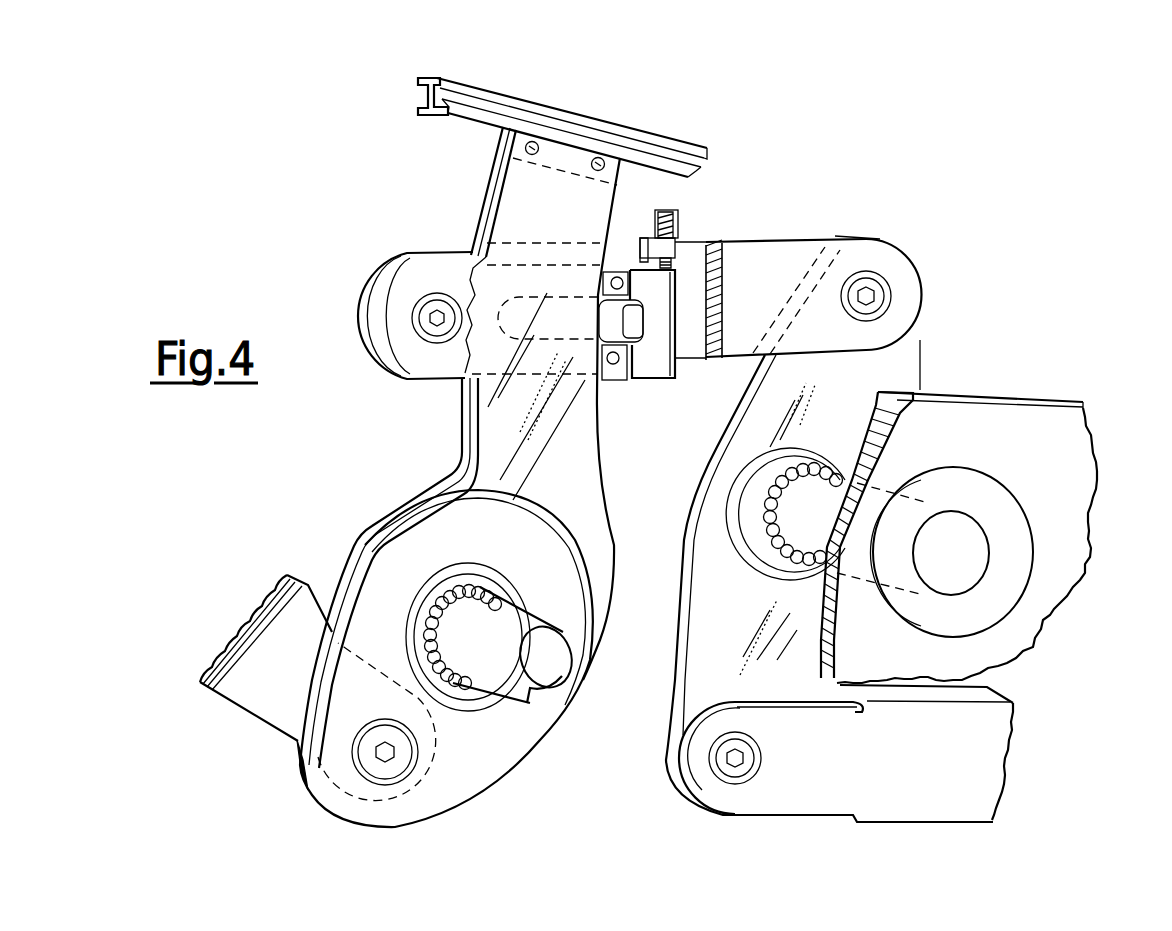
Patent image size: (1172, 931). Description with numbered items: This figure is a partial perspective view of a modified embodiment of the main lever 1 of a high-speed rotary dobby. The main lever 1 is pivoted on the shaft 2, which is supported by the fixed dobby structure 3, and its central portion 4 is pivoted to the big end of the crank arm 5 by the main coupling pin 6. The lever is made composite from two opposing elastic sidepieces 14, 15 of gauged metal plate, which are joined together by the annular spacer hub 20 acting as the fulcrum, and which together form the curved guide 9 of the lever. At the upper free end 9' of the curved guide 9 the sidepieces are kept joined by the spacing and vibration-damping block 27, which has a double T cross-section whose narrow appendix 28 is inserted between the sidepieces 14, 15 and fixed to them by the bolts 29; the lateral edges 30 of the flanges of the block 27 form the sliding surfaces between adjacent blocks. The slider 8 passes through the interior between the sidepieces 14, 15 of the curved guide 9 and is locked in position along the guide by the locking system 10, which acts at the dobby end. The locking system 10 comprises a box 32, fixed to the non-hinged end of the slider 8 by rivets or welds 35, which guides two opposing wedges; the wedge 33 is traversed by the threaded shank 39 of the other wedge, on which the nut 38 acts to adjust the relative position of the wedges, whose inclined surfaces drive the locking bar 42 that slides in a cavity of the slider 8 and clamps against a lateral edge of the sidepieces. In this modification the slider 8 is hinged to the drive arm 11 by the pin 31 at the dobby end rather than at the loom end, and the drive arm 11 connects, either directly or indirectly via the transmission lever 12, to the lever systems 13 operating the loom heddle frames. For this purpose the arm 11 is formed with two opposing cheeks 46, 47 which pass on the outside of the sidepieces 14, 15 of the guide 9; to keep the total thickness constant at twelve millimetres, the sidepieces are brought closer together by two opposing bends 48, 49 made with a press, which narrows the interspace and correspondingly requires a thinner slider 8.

The main lever 1 is at (619, 486).
The shaft 2 is at (507, 682).
The fixed dobby structure 3 is at (1060, 520).
The central portion 4 is at (462, 775).
The crank arm 5 is at (273, 700).
The main coupling pin 6 is at (385, 775).
The slider 8 is at (493, 360).
The curved guide 9 is at (561, 382).
The upper free end 9' is at (565, 116).
The locking system 10 is at (652, 388).
The drive arm 11 is at (840, 238).
The transmission lever 12 is at (712, 652).
The lever systems 13 is at (970, 742).
The sidepiece 14 is at (478, 220).
The sidepiece 15 is at (492, 222).
The annular spacer hub 20 is at (490, 584).
The spacing and vibration-damping block 27 is at (480, 100).
The narrow appendix 28 is at (490, 142).
The bolts 29 is at (532, 142).
The lateral edges 30 is at (440, 78).
The pin 31 is at (432, 327).
The box 32 is at (657, 358).
The wedge 33 is at (668, 248).
The rivets or welds 35 is at (617, 277).
The nut 38 is at (658, 212).
The threaded shank 39 is at (668, 220).
The locking bar 42 is at (630, 330).
The cheek 46 is at (418, 287).
The cheek 47 is at (363, 309).
The bend 48 is at (353, 530).
The bend 49 is at (372, 542).